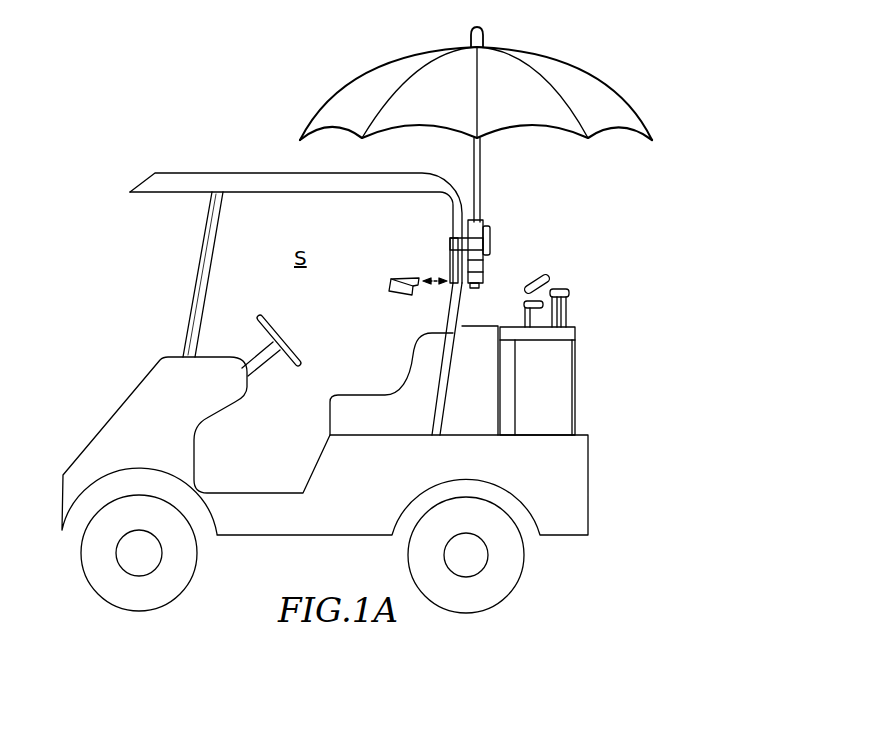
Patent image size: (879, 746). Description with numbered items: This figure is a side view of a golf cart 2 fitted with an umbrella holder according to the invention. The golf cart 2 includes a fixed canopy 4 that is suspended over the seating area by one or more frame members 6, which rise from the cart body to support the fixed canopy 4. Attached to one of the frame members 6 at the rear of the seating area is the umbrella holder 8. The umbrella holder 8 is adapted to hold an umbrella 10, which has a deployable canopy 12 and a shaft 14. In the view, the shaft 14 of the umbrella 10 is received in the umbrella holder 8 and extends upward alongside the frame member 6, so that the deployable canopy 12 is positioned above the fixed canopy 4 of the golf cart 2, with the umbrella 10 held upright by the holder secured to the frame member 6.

The golf cart 2 is at (582, 480).
The fixed canopy 4 is at (190, 175).
The frame member 6 is at (204, 258).
The umbrella holder 8 is at (502, 251).
The umbrella 10 is at (526, 121).
The deployable canopy 12 is at (633, 110).
The shaft 14 is at (481, 178).